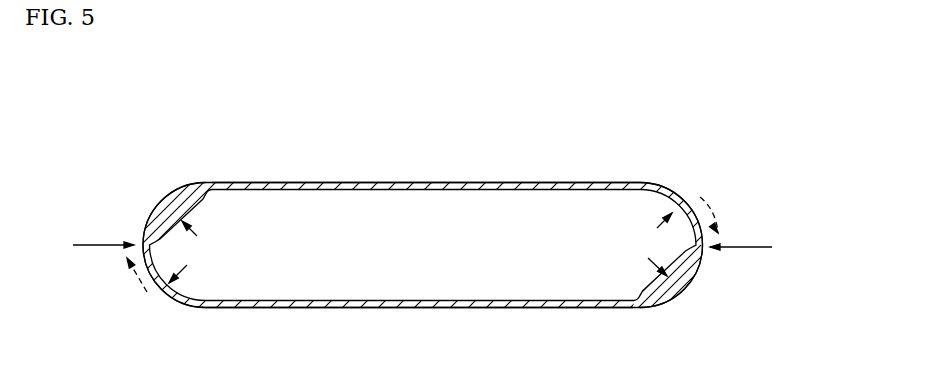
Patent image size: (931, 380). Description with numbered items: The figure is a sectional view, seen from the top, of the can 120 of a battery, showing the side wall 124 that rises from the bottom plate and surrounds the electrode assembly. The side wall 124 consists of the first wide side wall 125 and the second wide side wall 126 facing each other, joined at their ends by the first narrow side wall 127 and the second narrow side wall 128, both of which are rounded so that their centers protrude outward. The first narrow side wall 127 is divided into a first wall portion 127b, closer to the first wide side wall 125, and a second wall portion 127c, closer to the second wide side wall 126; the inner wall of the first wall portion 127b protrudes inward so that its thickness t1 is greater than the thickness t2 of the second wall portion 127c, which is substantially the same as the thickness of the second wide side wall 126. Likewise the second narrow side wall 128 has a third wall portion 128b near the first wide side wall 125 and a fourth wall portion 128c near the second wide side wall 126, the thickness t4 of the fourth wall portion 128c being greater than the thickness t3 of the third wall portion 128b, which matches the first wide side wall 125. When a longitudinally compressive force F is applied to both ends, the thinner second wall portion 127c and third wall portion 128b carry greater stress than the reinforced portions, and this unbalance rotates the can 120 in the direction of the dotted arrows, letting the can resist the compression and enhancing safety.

The can 120 is at (107, 122).
The side wall 124 is at (552, 182).
The first wide side wall 125 is at (382, 183).
The second wide side wall 126 is at (297, 308).
The first narrow side wall 127 is at (150, 222).
The first wall portion 127b is at (215, 185).
The second wall portion 127c is at (177, 303).
The second narrow side wall 128 is at (697, 275).
The third wall portion 128b is at (672, 185).
The fourth wall portion 128c is at (670, 303).
The thickness of the first wall portion t1 is at (157, 196).
The thickness of the second wall portion t2 is at (162, 290).
The thickness of the third wall portion t3 is at (687, 197).
The thickness of the fourth wall portion t4 is at (683, 294).
The longitudinally compressive force F is at (422, 244).